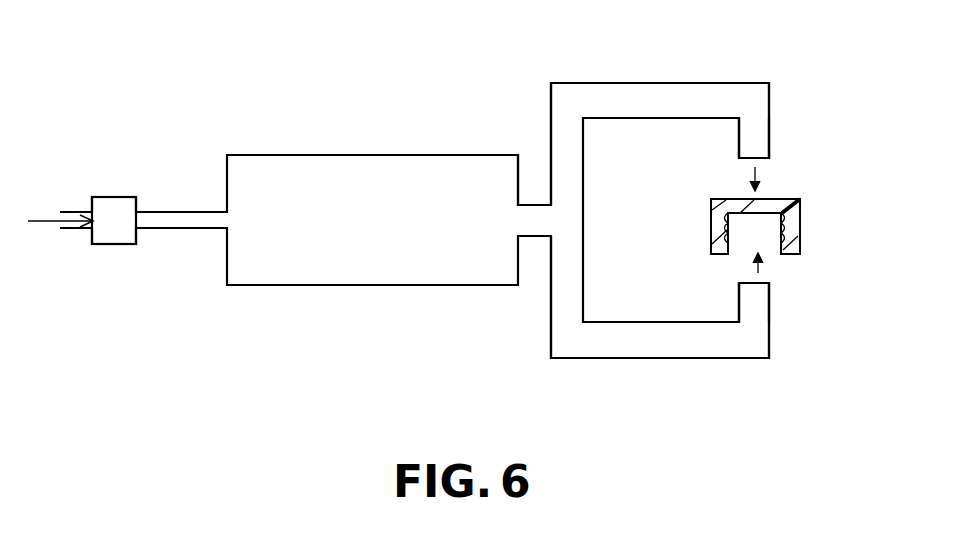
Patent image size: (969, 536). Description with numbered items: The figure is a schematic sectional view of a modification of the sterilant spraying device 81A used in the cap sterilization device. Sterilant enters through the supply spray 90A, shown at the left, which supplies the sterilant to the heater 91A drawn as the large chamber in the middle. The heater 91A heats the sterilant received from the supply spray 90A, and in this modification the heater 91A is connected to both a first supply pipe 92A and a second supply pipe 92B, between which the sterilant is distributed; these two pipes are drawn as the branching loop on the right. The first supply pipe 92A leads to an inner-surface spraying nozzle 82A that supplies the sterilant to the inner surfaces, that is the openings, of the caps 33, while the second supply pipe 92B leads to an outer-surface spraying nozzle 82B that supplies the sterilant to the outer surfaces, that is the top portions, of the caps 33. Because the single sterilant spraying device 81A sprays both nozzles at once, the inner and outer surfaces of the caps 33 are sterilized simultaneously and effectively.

The supply spray 90A is at (114, 203).
The heater 91A is at (287, 171).
The sterilant spraying device 81A is at (424, 128).
The second supply pipe 92B is at (673, 100).
The first supply pipe 92A is at (667, 340).
The outer-surface spraying nozzle 82B is at (753, 141).
The inner-surface spraying nozzle 82A is at (753, 299).
The cap 33 is at (793, 229).